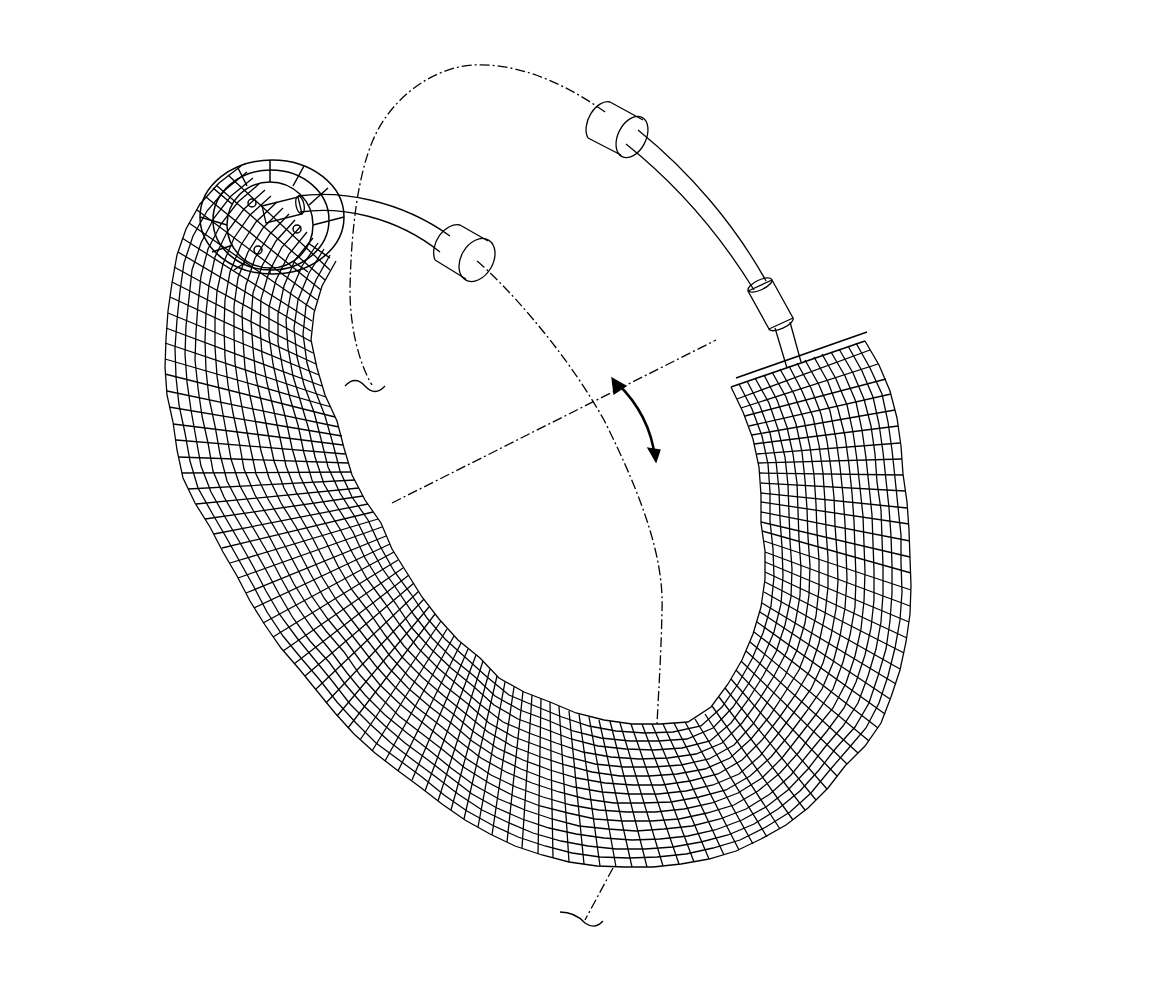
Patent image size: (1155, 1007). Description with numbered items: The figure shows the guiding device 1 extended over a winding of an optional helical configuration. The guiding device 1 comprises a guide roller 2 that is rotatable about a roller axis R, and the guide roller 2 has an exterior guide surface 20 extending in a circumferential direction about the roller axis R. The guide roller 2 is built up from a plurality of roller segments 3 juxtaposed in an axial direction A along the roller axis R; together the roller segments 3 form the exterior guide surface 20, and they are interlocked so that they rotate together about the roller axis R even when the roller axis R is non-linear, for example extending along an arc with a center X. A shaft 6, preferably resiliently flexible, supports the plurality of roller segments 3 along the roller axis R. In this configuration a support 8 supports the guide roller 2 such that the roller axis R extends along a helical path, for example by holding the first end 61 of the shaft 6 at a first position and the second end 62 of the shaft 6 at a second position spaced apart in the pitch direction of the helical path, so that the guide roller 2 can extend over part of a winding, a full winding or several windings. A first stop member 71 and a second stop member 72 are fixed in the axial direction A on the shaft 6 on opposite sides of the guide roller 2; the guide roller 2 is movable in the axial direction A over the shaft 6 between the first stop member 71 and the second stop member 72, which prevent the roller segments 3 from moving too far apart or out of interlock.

The guiding device 1 is at (145, 140).
The guide roller 2 is at (162, 572).
The roller segments 3 is at (305, 680).
The exterior guide surface 20 is at (407, 580).
The shaft 6 is at (735, 230).
The first end 61 is at (665, 160).
The second end 62 is at (402, 230).
The first stop member 71 is at (790, 305).
The second stop member 72 is at (290, 185).
The support 8 is at (462, 242).
The roller axis R is at (537, 316).
The center X is at (563, 405).
The axial direction A is at (642, 420).